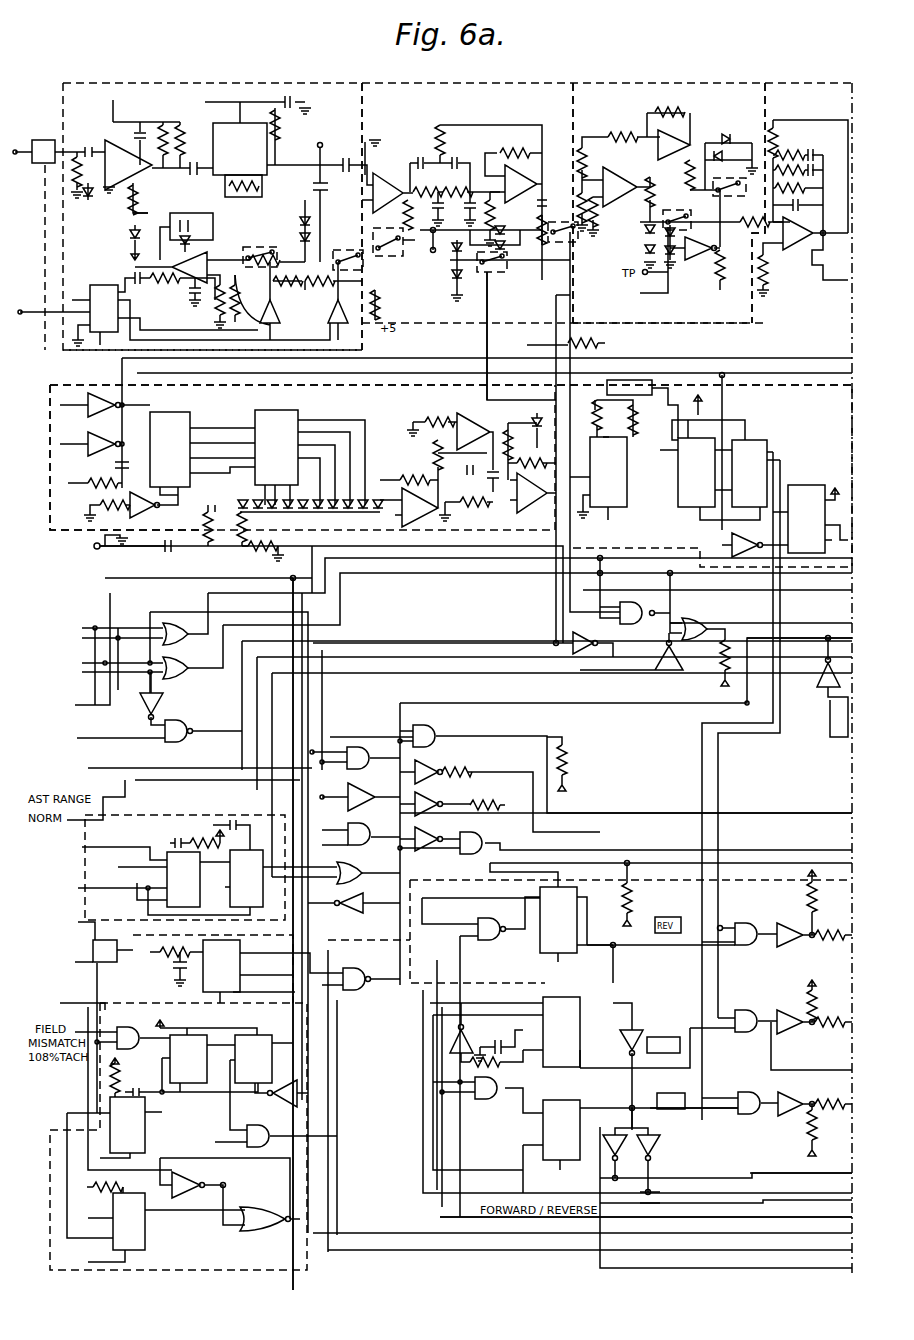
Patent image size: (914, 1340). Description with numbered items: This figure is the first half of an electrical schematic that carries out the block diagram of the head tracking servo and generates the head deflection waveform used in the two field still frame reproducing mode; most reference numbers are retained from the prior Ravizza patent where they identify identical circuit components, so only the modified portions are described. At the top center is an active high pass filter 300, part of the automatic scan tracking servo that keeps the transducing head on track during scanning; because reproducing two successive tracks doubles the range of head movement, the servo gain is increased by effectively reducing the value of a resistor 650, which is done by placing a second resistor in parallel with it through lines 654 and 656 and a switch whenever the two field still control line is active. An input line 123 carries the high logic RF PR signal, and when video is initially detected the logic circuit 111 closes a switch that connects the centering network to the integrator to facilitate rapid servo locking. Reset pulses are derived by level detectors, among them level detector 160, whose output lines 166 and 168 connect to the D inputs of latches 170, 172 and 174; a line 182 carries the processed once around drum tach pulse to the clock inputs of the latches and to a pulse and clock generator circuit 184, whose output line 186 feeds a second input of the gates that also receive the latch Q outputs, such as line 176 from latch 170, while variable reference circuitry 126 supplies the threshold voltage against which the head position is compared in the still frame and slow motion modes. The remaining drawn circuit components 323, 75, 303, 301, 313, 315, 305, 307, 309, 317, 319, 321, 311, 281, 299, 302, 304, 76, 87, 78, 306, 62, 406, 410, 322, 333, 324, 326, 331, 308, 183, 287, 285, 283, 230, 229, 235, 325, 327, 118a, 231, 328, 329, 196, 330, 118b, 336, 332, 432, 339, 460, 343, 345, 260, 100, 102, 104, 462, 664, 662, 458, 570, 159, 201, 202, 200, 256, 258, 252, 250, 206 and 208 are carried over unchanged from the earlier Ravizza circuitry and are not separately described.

The AST RF input terminal 323 is at (52, 140).
The RF amplifier MC1350 75 is at (76, 150).
The video detector MC1330 303 is at (258, 123).
The bias resistor 301 is at (154, 199).
The filter network 313 is at (185, 215).
The diode 315 is at (200, 242).
The coupling capacitor 305 is at (315, 190).
The diode clamp 307 is at (300, 225).
The switch 309 is at (345, 250).
The zener diode 317 is at (130, 235).
The drum tach one-shot 319 is at (95, 285).
The drum tach input 321 is at (77, 291).
The comparator amplifier 311 is at (195, 285).
The inverter output line 281 is at (291, 307).
The switch 299 is at (250, 252).
The line 654 is at (420, 160).
The resistor 650 is at (410, 260).
The line 656 is at (433, 255).
The switch 302 is at (495, 272).
The switch 304 is at (555, 243).
The active high pass filter 300 is at (468, 323).
The RF envelope detector block 76 is at (226, 346).
The control line 87 is at (564, 346).
The error amplifier block 78 is at (681, 229).
The pulse and clock generator circuit 184 is at (762, 370).
The reference input block 306 is at (100, 385).
The dither input buffer 62 is at (88, 445).
The counter 74393 406 is at (158, 406).
The decoder 7445 410 is at (288, 412).
The timing block 322 is at (310, 375).
The +5 supply connection 333 is at (650, 410).
The flip-flop pair LS74 324 is at (772, 422).
The counter LS193 326 is at (803, 485).
The one-shot LS123 331 is at (627, 500).
The sense amp input 308 is at (110, 550).
The drum tach junction 183 is at (292, 578).
The line 182 is at (143, 580).
The OR gate 287 is at (105, 630).
The OR gate 285 is at (132, 652).
The auto track input 283 is at (110, 680).
The inverter 230 is at (158, 710).
The NAND gate 229 is at (190, 725).
The auto track delay line 235 is at (187, 767).
The signal line 325 is at (362, 643).
The inverter 327 is at (598, 648).
The output line 186 is at (780, 655).
The AND gate 118a is at (355, 750).
The AND gate 231 is at (448, 720).
The buffer 328 is at (435, 765).
The resistor 329 is at (470, 768).
The variable reference circuitry 126 is at (495, 768).
The signal line 196 is at (485, 803).
The buffer 330 is at (442, 790).
The AND gate 118b is at (361, 827).
The AND gate 336 is at (487, 835).
The signal line 332 is at (345, 737).
The wind disable logic 432 is at (112, 848).
The center track input 339 is at (115, 888).
The input line 123 is at (84, 943).
The field reference input 460 is at (103, 1003).
The one-shot LS123 343 is at (243, 962).
The NAND gate 345 is at (355, 968).
The NAND gate 260 is at (478, 922).
The latch 170 is at (540, 935).
The logic circuit 111 is at (640, 890).
The line 176 is at (635, 948).
The reverse AND gate 100 is at (748, 923).
The still AND gate 102 is at (750, 1010).
The forward AND gate 104 is at (745, 1092).
The latch 172 is at (585, 1020).
The latch 174 is at (585, 1115).
The buffer 462 is at (450, 1045).
The capacitor 664 is at (500, 1030).
The resistor 662 is at (505, 1100).
The AND gate 458 is at (485, 1102).
The signal line 570 is at (438, 985).
The forward/reverse line 159 is at (460, 1217).
The level detector 160 is at (663, 1190).
The output line 166 is at (690, 1203).
The output line 168 is at (740, 1176).
The AND gate 201 is at (130, 1048).
The flip-flop LS74 202 is at (178, 1085).
The flip-flop LS74 200 is at (272, 1058).
The inverter 256 is at (262, 1100).
The AND gate 258 is at (280, 1128).
The one-shot LS123 252 is at (145, 1143).
The buffer 250 is at (200, 1178).
The one-shot LS123 206 is at (147, 1237).
The NOR gate C30 208 is at (255, 1230).